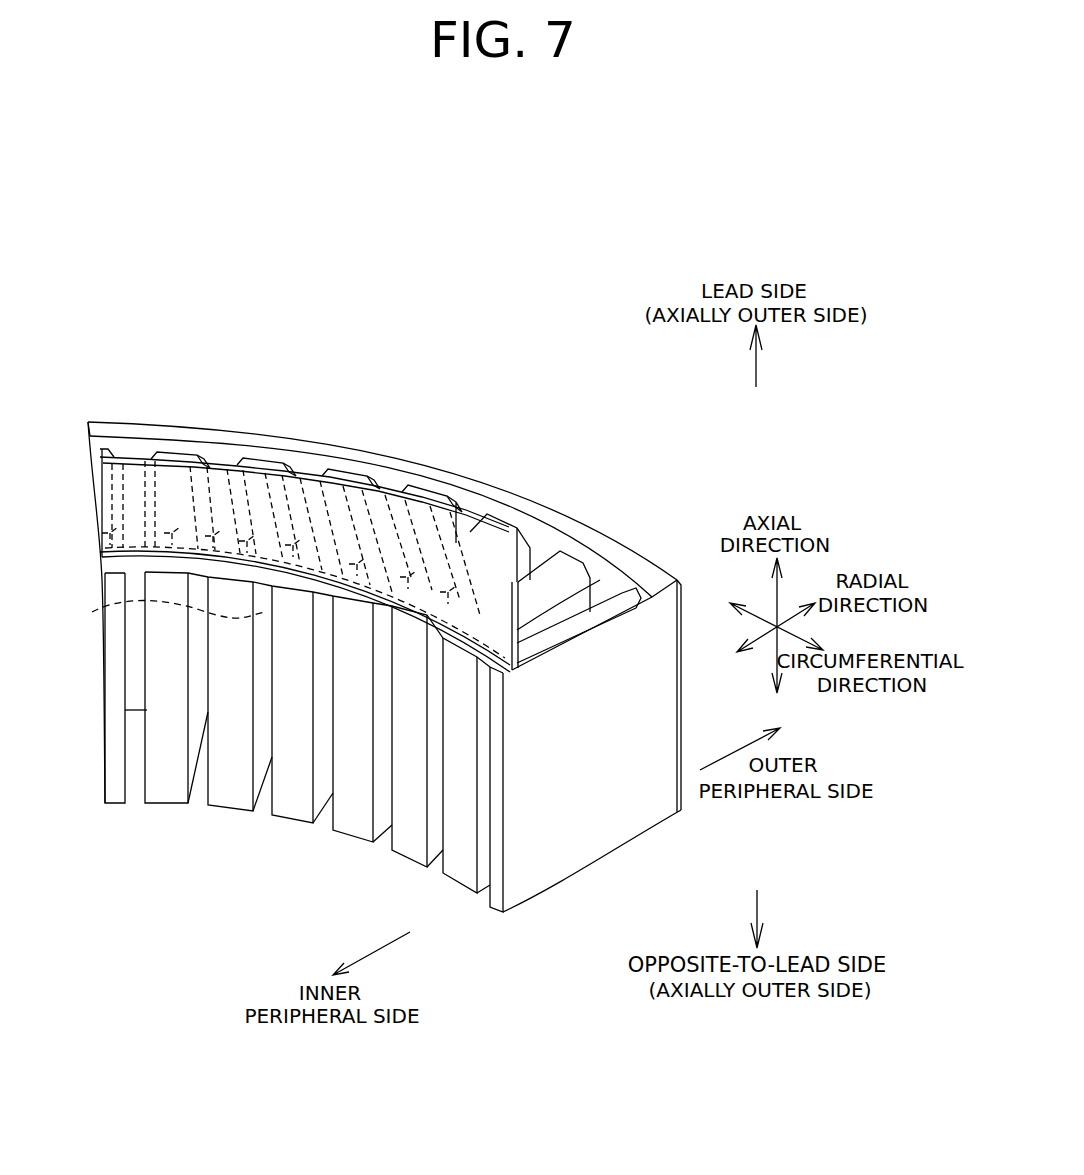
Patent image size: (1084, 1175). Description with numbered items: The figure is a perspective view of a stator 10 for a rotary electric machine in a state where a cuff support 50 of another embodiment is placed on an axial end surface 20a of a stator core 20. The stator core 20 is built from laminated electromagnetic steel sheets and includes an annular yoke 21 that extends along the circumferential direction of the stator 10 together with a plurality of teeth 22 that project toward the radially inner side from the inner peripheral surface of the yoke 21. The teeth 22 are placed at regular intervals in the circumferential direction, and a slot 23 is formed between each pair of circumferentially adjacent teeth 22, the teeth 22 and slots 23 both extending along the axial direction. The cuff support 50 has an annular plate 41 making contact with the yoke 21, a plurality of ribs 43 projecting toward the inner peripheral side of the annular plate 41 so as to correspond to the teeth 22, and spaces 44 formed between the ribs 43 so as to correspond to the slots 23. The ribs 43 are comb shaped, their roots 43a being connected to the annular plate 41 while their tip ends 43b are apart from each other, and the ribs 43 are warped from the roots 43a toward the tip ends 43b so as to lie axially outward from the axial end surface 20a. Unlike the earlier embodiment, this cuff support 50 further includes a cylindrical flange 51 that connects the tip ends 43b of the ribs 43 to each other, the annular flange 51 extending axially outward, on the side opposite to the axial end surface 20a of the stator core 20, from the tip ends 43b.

The stator 10 is at (541, 214).
The stator core 20 is at (503, 437).
The axial end surface 20a is at (643, 573).
The yoke 21 is at (139, 420).
The teeth 22 is at (155, 663).
The slot 23 is at (205, 764).
The annular plate 41 is at (305, 462).
The ribs 43 is at (348, 470).
The roots 43a is at (391, 468).
The tip ends 43b is at (274, 602).
The spaces 44 is at (533, 564).
The cuff support 50 is at (607, 572).
The flange 51 is at (216, 462).